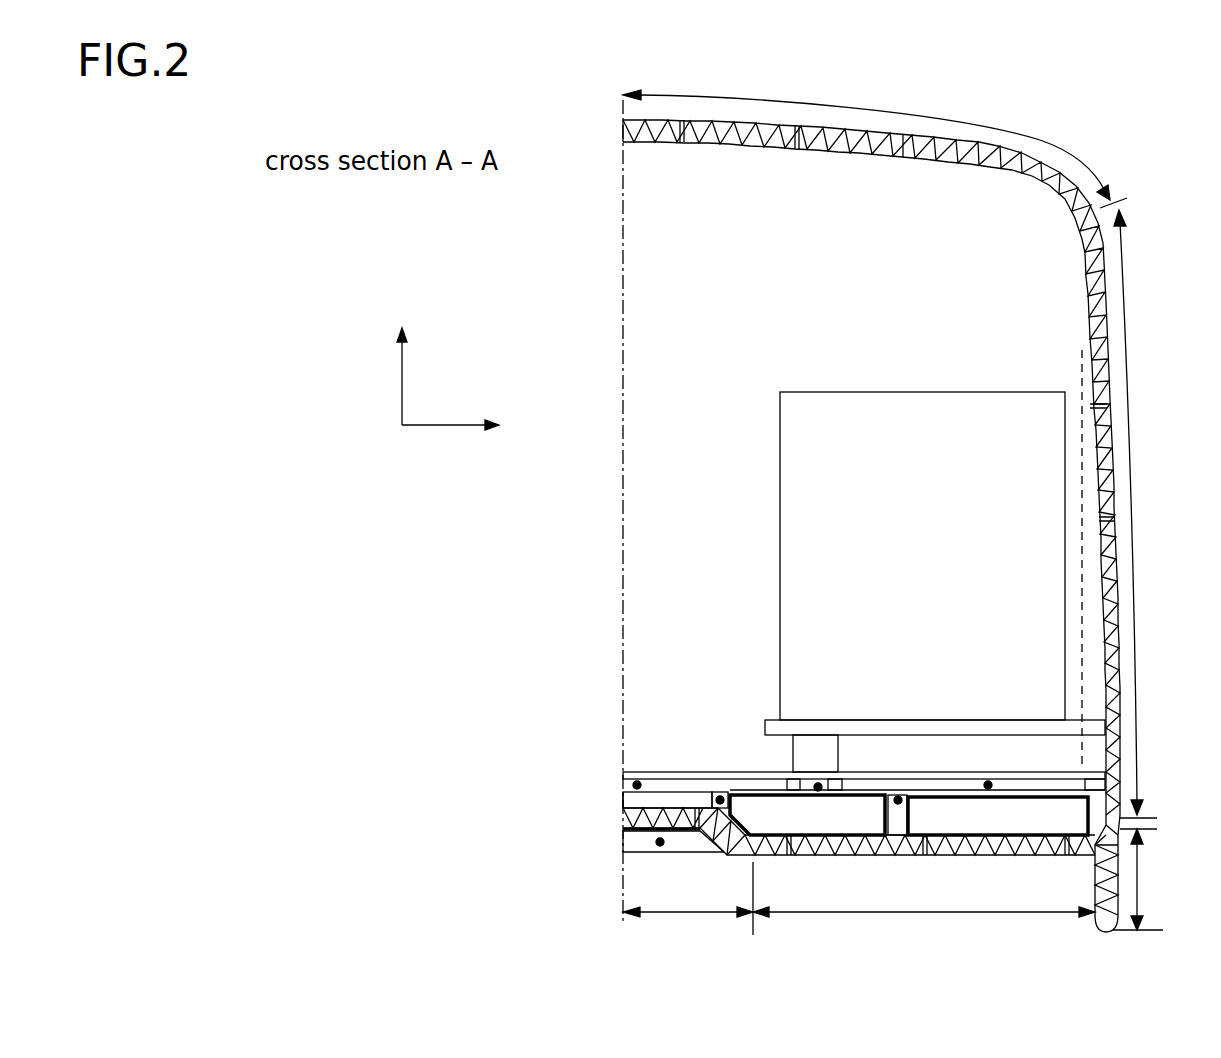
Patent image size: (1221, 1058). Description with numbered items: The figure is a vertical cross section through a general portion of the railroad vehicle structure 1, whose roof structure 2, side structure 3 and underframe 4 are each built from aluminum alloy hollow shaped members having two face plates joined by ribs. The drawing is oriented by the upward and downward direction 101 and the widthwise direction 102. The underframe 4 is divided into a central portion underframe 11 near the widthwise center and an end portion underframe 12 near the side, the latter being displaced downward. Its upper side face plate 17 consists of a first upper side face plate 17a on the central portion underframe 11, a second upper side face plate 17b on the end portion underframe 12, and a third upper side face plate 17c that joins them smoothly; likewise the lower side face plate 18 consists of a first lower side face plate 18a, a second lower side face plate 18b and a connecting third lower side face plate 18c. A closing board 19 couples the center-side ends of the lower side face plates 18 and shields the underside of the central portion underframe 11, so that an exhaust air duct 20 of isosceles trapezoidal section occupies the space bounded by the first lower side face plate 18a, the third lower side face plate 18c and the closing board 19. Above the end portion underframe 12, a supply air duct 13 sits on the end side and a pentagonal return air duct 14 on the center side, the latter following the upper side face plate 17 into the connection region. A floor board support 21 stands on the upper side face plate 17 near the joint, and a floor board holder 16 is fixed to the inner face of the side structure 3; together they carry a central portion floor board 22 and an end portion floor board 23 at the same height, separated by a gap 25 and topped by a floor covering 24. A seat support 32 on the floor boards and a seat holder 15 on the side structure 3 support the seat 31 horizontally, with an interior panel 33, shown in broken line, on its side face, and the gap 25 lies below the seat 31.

The railroad vehicle structure 1 is at (1097, 140).
The roof structure 2 is at (875, 144).
The side structure 3 is at (1127, 700).
The underframe 4 is at (1138, 879).
The central portion underframe 11 is at (688, 898).
The end portion underframe 12 is at (924, 900).
The supply air duct 13 is at (1035, 830).
The return air duct 14 is at (847, 830).
The seat holder 15 is at (1093, 738).
The floor board holder 16 is at (1110, 826).
The upper side face plate 17 is at (623, 806).
The first upper side face plate 17a is at (650, 806).
The second upper side face plate 17b is at (940, 858).
The third upper side face plate 17c is at (740, 830).
The lower side face plate 18 is at (787, 887).
The first lower side face plate 18a is at (623, 848).
The second lower side face plate 18b is at (945, 857).
The third lower side face plate 18c is at (731, 860).
The closing board 19 is at (637, 853).
The exhaust air duct 20 is at (660, 844).
The floor board support 21 is at (720, 800).
The central portion floor board 22 is at (637, 785).
The end portion floor board 23 is at (988, 785).
The floor covering 24 is at (632, 778).
The gap 25 is at (818, 787).
The seat 31 is at (934, 458).
The seat support 32 is at (832, 767).
The interior panel 33 is at (1080, 608).
The upward and downward direction 101 is at (406, 360).
The widthwise direction 102 is at (482, 425).